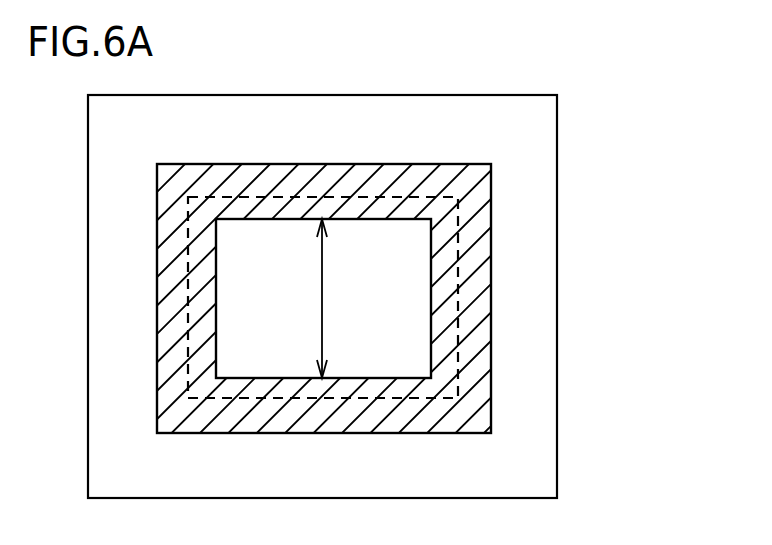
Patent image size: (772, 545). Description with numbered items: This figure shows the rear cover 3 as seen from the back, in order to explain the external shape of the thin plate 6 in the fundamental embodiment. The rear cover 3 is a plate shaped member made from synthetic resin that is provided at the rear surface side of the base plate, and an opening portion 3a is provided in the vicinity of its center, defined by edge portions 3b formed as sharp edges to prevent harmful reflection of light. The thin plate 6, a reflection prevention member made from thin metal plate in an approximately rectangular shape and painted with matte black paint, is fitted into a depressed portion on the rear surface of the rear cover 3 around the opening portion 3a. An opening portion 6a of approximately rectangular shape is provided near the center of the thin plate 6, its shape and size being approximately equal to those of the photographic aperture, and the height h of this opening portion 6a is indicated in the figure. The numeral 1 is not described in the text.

The display panel assembly 1 is at (563, 120).
The rear cover 3 is at (538, 160).
The thin plate 6 is at (485, 247).
The opening portion 6a is at (432, 297).
The opening portion 3a is at (458, 348).
The edge portions 3b is at (323, 297).